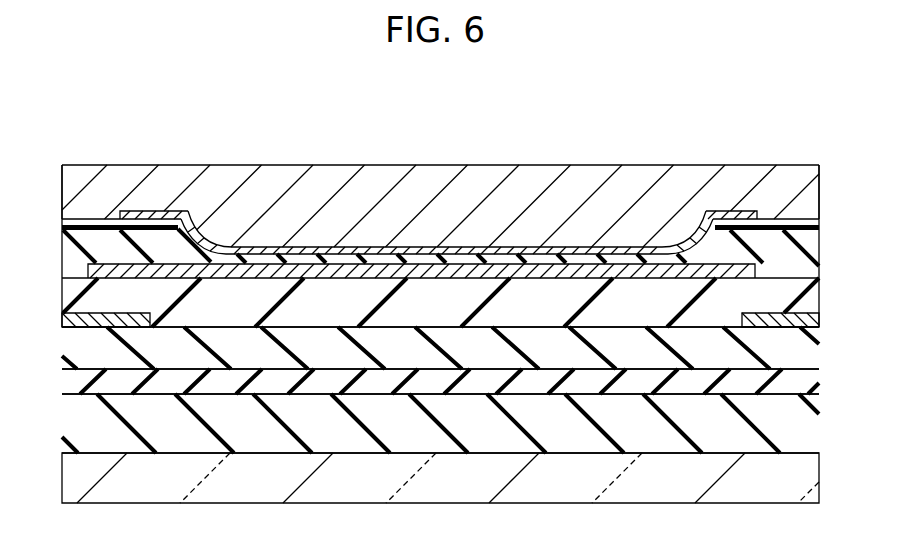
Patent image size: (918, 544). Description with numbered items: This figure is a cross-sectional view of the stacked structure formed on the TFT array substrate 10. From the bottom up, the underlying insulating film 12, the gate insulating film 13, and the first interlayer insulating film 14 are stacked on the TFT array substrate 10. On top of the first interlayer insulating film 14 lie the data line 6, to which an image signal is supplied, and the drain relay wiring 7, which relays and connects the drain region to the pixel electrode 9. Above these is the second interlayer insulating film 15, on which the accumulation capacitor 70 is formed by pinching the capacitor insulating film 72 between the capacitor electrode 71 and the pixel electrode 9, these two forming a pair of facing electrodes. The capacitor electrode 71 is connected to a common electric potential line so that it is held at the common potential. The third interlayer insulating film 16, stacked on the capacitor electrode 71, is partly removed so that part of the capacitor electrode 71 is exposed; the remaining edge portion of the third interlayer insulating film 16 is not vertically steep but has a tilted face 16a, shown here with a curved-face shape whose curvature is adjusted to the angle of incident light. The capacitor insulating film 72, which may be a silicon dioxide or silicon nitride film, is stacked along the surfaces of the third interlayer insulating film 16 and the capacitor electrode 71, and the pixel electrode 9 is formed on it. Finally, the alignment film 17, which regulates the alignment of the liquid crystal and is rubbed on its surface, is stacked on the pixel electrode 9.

The data line 6 is at (62, 313).
The drain relay wiring 7 is at (777, 312).
The pixel electrode 9 is at (420, 250).
The TFT array substrate 10 is at (820, 474).
The underlying insulating film 12 is at (820, 436).
The gate insulating film 13 is at (820, 378).
The first interlayer insulating film 14 is at (820, 350).
The second interlayer insulating film 15 is at (820, 296).
The third interlayer insulating film 16 is at (62, 248).
The tilted face 16a is at (208, 250).
The alignment film 17 is at (128, 171).
The accumulation capacitor 70 is at (422, 177).
The capacitor electrode 71 is at (339, 266).
The capacitor insulating film 72 is at (381, 260).